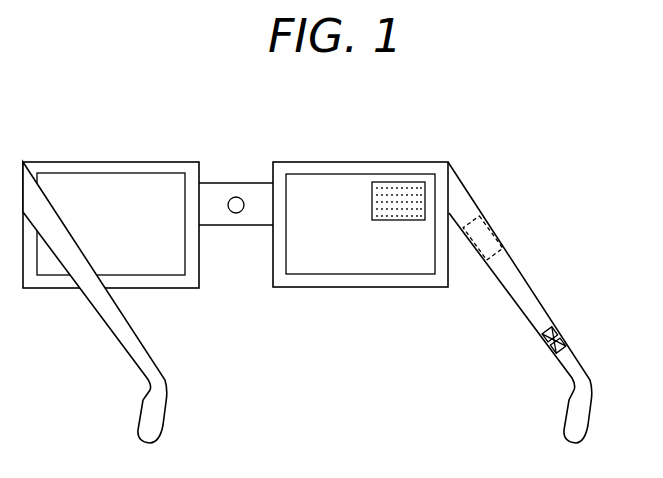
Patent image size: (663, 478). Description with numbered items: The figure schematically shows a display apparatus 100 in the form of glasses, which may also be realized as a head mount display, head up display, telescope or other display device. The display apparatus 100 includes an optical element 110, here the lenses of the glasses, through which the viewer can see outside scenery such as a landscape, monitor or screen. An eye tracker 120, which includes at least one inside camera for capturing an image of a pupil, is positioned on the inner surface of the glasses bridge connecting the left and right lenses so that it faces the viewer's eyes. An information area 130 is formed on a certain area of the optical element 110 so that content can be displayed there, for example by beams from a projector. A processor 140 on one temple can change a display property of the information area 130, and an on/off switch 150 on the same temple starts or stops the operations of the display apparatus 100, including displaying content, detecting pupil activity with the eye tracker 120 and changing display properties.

The display apparatus 100 is at (256, 113).
The optical element 110 is at (353, 274).
The eye tracker 120 is at (236, 213).
The information area 130 is at (390, 190).
The processor 140 is at (488, 232).
The on/off switch 150 is at (555, 338).